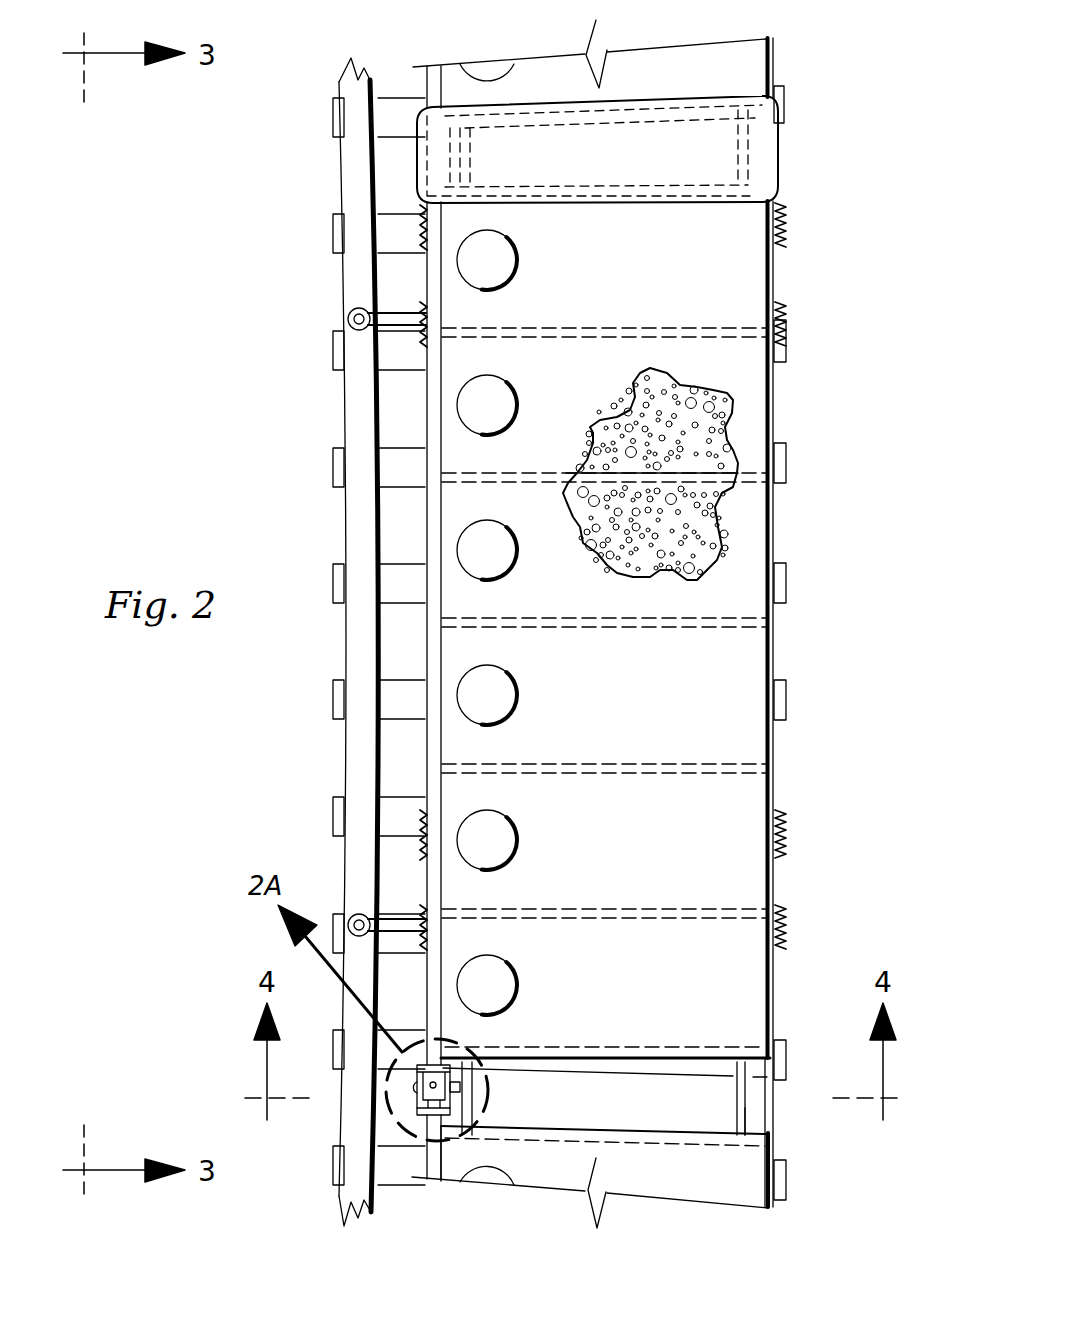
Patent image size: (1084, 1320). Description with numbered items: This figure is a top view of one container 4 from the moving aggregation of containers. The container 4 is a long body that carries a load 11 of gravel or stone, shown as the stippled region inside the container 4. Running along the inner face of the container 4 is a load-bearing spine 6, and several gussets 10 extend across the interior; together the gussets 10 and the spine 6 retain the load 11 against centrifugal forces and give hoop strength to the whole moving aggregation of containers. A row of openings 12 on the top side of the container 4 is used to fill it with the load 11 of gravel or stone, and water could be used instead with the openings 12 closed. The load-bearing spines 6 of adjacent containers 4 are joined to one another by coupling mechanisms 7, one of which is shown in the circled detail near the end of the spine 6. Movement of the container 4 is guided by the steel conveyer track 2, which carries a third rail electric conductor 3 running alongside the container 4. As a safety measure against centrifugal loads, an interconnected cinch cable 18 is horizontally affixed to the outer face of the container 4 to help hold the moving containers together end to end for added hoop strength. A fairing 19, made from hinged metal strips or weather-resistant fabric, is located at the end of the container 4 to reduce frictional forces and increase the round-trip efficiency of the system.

The steel conveyer track 2 is at (745, 1108).
The third rail electric conductor 3 is at (344, 767).
The container 4 is at (842, 236).
The load-bearing spine 6 is at (426, 640).
The coupling mechanism 7 is at (432, 149).
The gusset 10 is at (495, 478).
The load of gravel or stone 11 is at (640, 527).
The opening 12 is at (457, 543).
The cinch cable 18 is at (777, 1102).
The fairing 19 is at (779, 153).